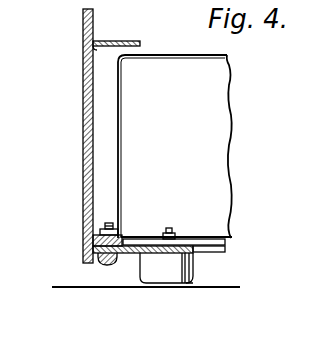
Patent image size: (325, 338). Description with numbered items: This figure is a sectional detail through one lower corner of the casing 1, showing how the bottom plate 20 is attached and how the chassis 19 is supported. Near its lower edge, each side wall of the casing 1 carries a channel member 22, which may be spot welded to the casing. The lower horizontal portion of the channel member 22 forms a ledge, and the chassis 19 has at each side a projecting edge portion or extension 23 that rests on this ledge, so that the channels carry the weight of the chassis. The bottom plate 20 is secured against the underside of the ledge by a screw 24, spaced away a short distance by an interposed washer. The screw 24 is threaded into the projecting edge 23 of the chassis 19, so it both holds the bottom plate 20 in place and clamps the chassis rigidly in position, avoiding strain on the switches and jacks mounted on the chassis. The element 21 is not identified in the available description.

The casing 1 is at (91, 134).
The channel member 22 is at (113, 41).
The chassis 19 is at (215, 117).
The projecting edge portion 23 is at (96, 232).
The bottom plate 20 is at (129, 254).
The screw 24 is at (104, 256).
The support bracket 21 is at (193, 267).